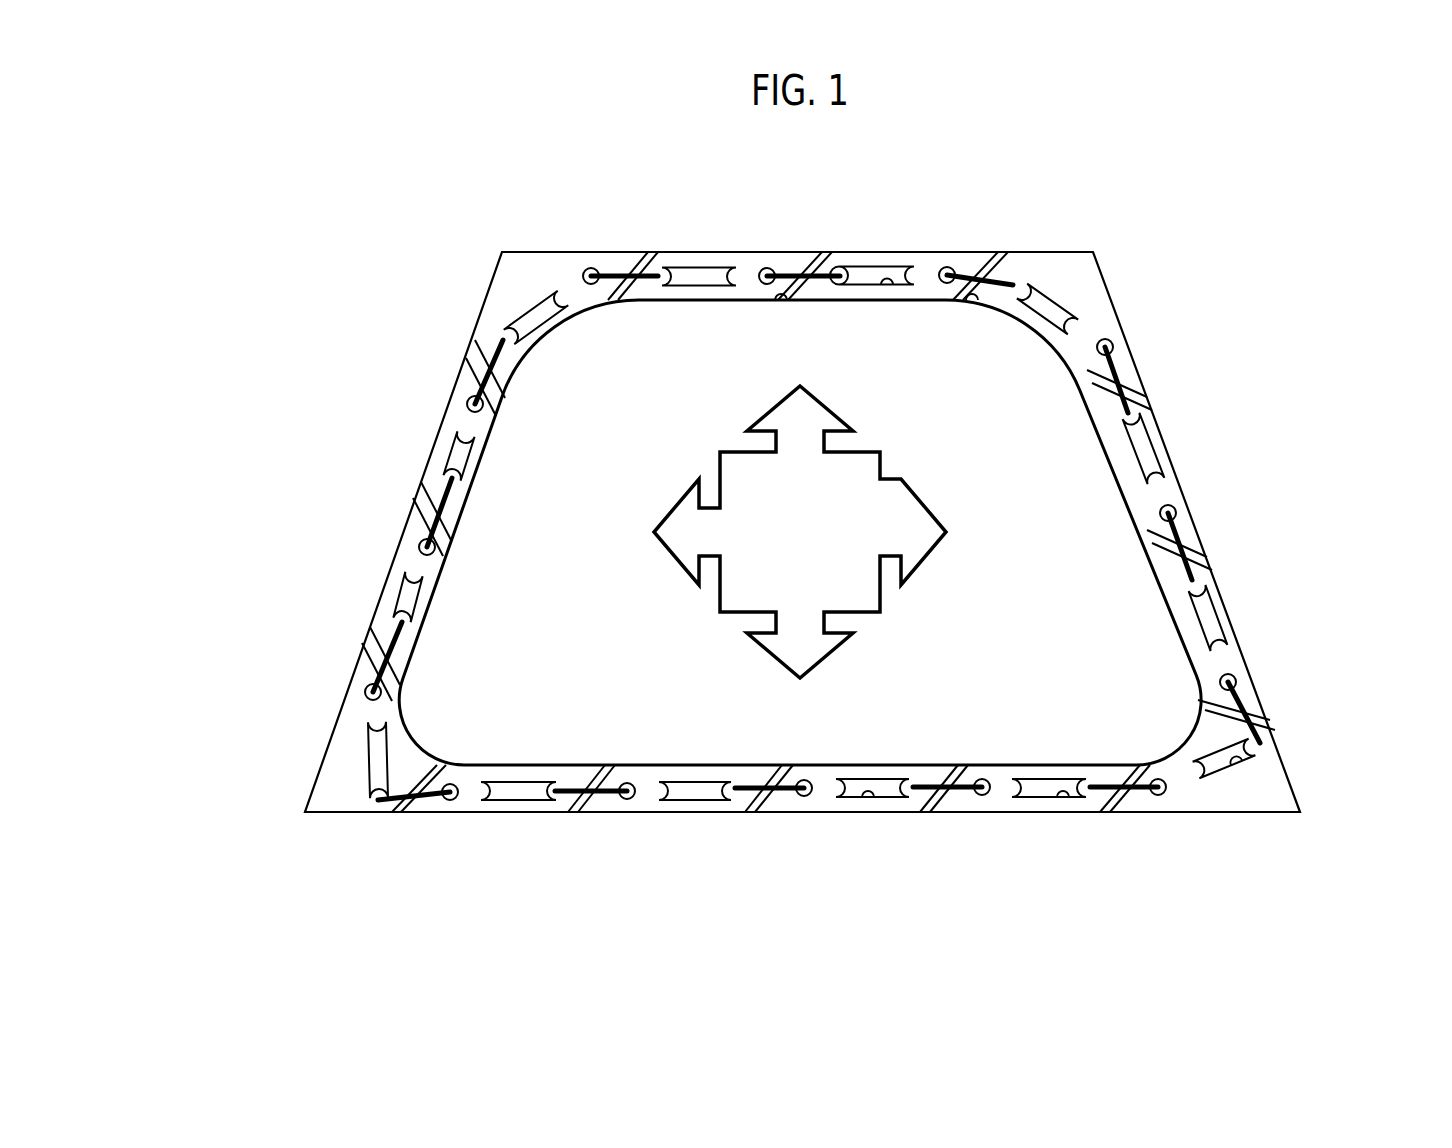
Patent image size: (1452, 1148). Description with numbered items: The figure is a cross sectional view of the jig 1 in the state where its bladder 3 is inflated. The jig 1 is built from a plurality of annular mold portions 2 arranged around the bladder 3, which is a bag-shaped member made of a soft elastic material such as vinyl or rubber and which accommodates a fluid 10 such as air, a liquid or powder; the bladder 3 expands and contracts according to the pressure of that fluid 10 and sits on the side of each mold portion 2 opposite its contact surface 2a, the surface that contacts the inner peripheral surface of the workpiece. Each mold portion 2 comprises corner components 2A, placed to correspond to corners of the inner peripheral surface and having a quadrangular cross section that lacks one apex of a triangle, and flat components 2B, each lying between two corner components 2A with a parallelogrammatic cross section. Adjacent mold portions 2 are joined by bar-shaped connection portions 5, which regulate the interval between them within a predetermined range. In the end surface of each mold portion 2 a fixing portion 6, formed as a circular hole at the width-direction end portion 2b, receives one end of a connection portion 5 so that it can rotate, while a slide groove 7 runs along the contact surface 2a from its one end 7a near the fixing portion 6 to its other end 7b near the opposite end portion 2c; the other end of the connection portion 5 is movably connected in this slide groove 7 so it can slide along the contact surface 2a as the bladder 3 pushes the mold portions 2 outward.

The jig 1 is at (1118, 268).
The mold portion 2 is at (783, 548).
The corner component 2A is at (540, 265).
The flat component 2B is at (735, 265).
The contact surface 2a is at (630, 250).
The end portion 2b is at (973, 305).
The end portion 2c is at (781, 296).
The bladder 3 is at (1057, 351).
The connection portion 5 is at (815, 285).
The fixing portion 6 is at (770, 285).
The slide groove 7 is at (889, 286).
The one end 7a is at (925, 262).
The other end 7b is at (823, 270).
The fluid 10 is at (1105, 487).